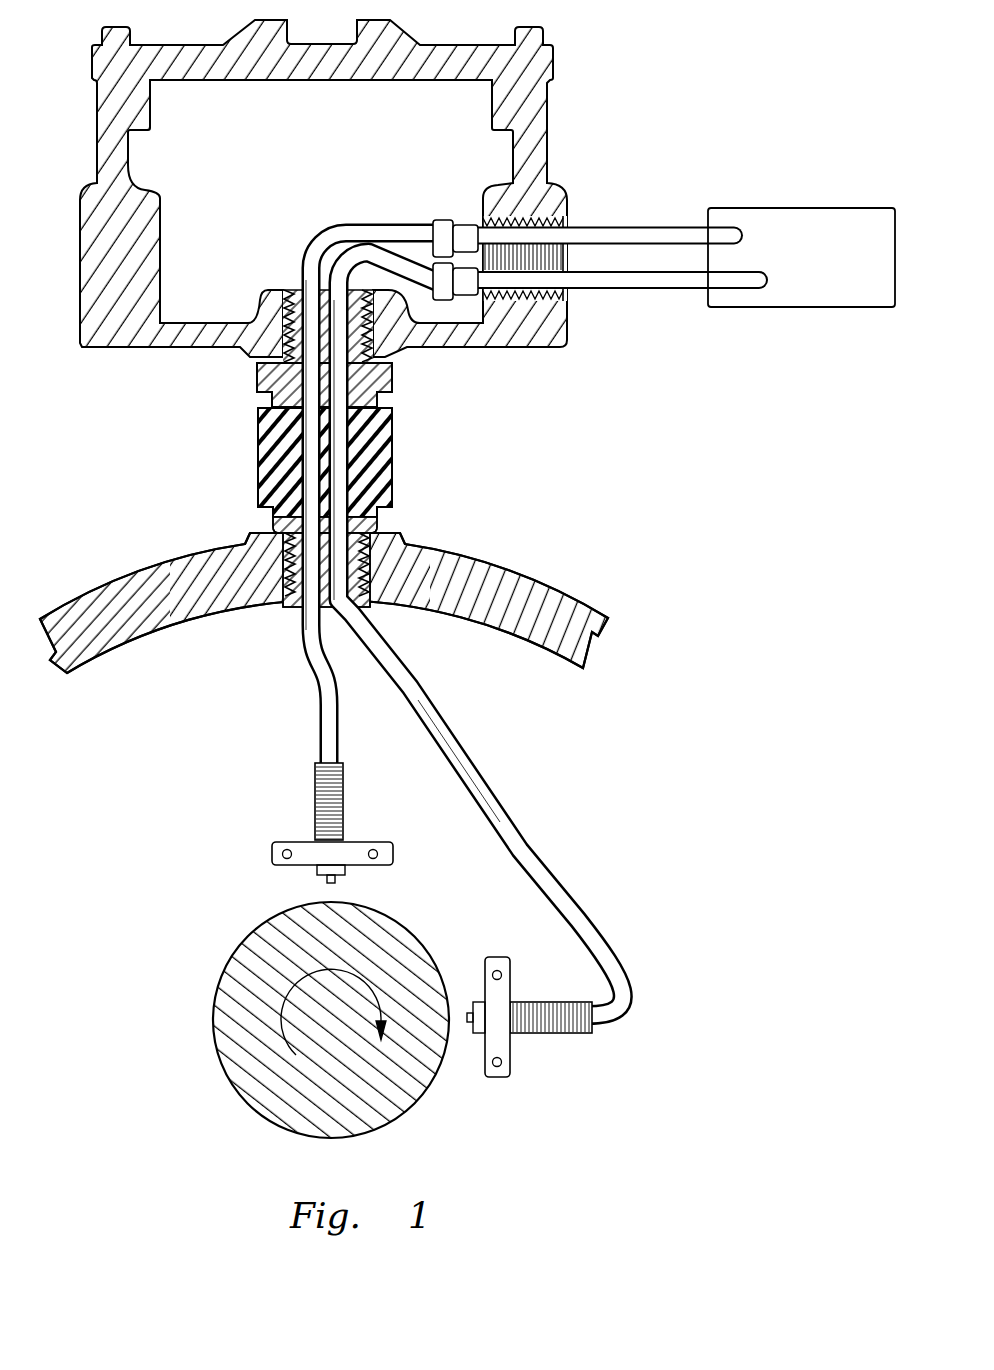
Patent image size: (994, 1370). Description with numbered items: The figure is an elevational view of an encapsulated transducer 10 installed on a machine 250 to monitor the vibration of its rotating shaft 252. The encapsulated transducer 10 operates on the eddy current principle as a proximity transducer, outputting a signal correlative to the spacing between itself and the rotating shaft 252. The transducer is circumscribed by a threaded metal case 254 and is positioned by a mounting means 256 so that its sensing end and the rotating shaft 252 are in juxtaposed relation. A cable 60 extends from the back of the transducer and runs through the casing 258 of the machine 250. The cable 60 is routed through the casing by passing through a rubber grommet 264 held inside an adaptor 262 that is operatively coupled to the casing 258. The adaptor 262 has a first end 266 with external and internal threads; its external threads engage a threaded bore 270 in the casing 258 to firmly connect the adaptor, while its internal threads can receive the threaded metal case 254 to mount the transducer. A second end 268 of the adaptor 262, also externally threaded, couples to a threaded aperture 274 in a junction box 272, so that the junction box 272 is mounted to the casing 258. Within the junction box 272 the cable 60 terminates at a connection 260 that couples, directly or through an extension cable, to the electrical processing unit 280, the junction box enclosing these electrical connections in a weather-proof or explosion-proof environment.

The encapsulated transducer 10 is at (447, 936).
The cable 60 is at (302, 655).
The machine 250 is at (371, 595).
The rotating shaft 252 is at (235, 950).
The threaded metal case 254 is at (315, 813).
The mounting means 256 is at (272, 856).
The casing 258 is at (582, 610).
The connection 260 is at (437, 218).
The adaptor 262 is at (378, 445).
The rubber grommet 264 is at (395, 456).
The first end 266 is at (285, 602).
The second end 268 is at (287, 290).
The threaded bore 270 is at (286, 528).
The junction box 272 is at (80, 350).
The threaded aperture 274 is at (258, 370).
The electrical processing unit 280 is at (797, 215).